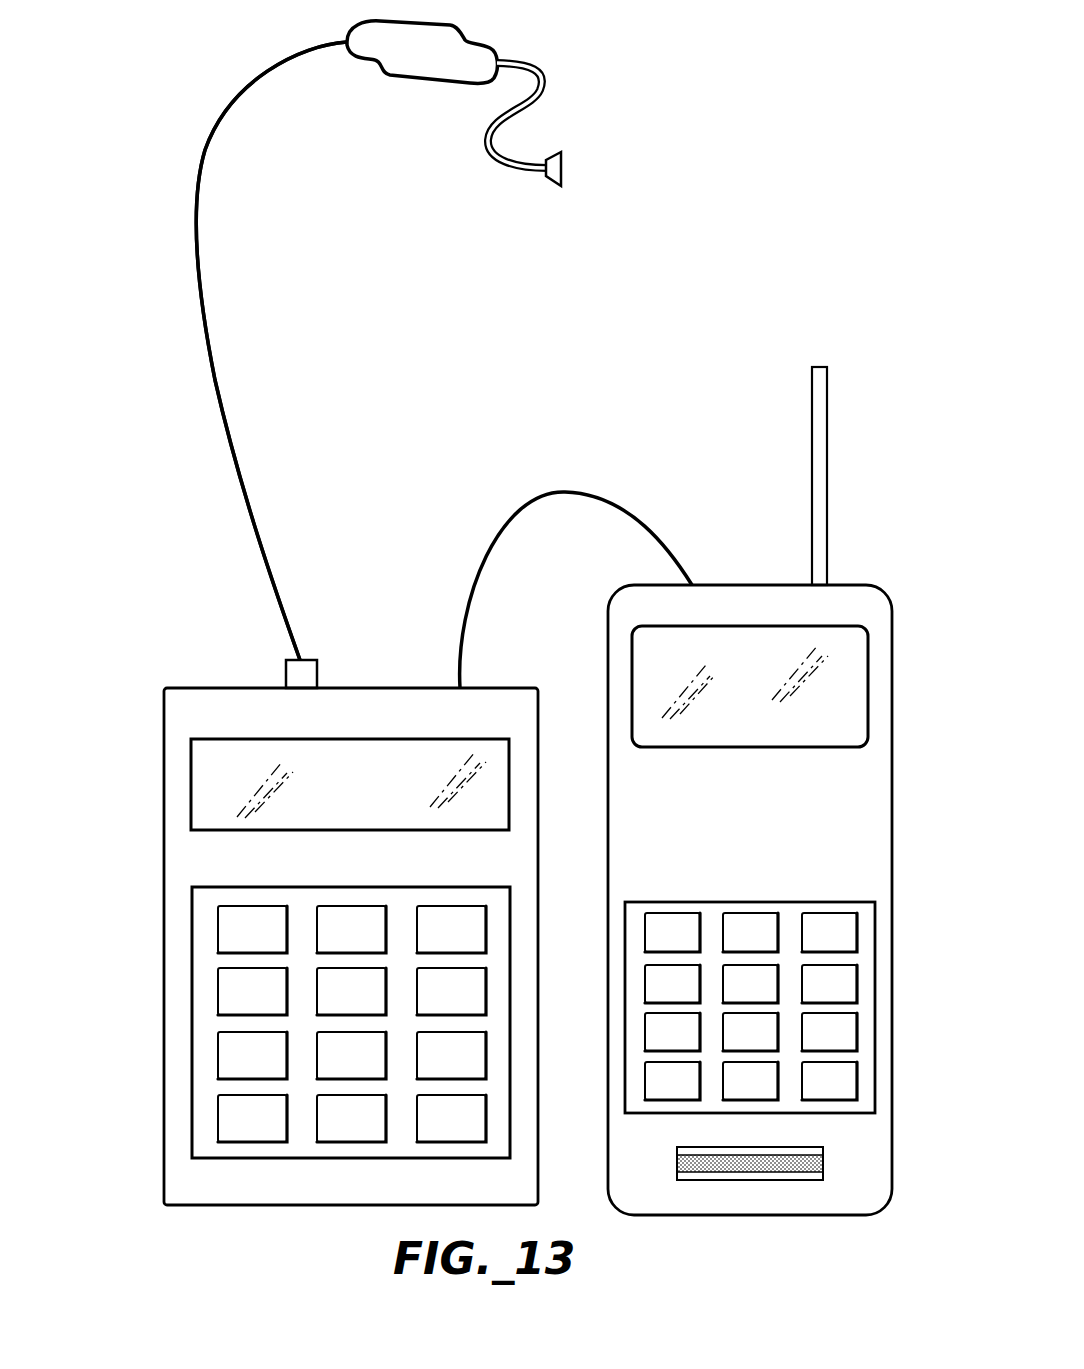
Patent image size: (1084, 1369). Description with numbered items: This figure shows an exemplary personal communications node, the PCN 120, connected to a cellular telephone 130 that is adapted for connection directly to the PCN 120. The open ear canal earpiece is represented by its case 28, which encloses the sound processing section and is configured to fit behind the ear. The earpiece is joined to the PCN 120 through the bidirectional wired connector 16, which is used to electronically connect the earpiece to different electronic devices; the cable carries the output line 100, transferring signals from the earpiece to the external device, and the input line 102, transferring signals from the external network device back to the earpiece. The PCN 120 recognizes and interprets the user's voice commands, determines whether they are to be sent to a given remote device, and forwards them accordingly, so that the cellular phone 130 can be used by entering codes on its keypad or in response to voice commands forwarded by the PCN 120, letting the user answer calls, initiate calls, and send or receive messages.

The case 28 is at (470, 42).
The output line 100 is at (222, 390).
The input line 102 is at (271, 351).
The bidirectional wired connector 16 is at (312, 660).
The personal communications node 120 is at (228, 688).
The cellular telephone 130 is at (712, 585).